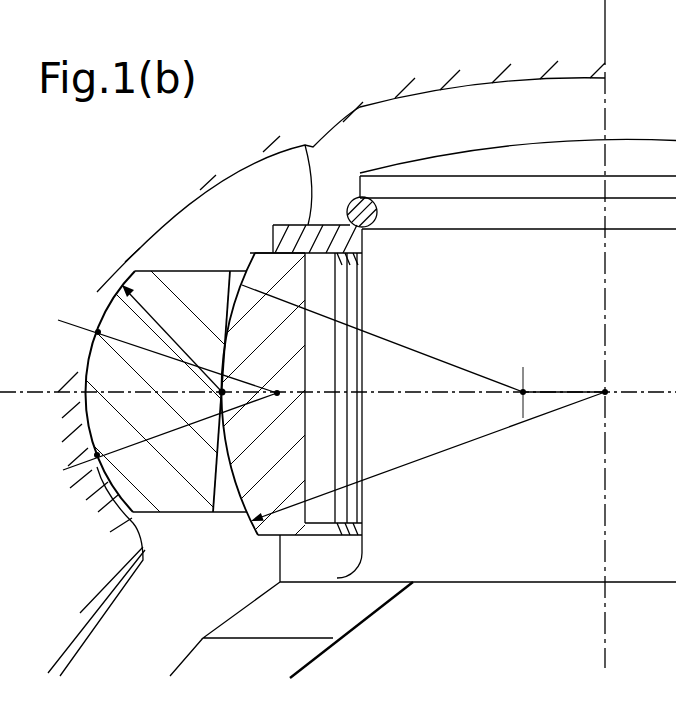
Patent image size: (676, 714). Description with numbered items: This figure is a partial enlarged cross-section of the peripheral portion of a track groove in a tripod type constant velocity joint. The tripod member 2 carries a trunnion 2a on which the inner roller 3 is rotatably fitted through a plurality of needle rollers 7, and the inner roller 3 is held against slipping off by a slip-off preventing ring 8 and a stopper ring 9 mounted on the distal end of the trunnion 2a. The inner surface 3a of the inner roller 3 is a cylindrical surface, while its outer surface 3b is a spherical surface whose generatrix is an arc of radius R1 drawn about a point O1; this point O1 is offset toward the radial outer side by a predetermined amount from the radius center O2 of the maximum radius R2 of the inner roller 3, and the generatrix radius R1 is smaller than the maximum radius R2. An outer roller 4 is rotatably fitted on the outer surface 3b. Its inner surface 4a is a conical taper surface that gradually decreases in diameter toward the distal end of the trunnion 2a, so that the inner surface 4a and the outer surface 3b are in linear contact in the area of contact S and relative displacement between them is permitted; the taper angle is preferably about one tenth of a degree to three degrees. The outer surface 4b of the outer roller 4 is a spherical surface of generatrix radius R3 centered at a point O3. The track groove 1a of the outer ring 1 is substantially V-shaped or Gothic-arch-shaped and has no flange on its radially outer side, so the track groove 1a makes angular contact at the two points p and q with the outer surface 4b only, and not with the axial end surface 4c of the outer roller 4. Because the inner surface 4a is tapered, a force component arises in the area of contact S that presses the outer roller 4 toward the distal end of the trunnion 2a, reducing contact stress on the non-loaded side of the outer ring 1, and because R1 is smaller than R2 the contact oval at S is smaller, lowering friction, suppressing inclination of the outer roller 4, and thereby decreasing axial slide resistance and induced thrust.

The outer ring 1 is at (62, 628).
The track groove 1a is at (97, 378).
The tripod member 2 is at (233, 630).
The trunnion 2a is at (526, 243).
The inner roller 3 is at (263, 537).
The inner surface of the inner roller 3a is at (322, 279).
The outer surface of the inner roller 3b is at (243, 260).
The outer roller 4 is at (128, 520).
The inner surface of the outer roller 4a is at (222, 497).
The outer surface of the outer roller 4b is at (92, 495).
The axial end surface of the outer roller 4c is at (175, 262).
The needle rollers 7 is at (358, 511).
The slip-off preventing ring 8 is at (300, 146).
The stopper ring 9 is at (355, 197).
The generatrix center of the outer surface of the inner roller O1 is at (525, 390).
The radius center of the maximum radius of the inner roller O2 is at (607, 390).
The generatrix center of the outer surface of the outer roller O3 is at (278, 392).
The generatrix radius of the outer surface of the inner roller R1 is at (382, 338).
The maximum radius of the inner roller R2 is at (428, 456).
The generatrix radius of the outer surface of the outer roller R3 is at (143, 241).
The area of contact S is at (215, 396).
The contact point p is at (98, 332).
The contact point q is at (97, 455).